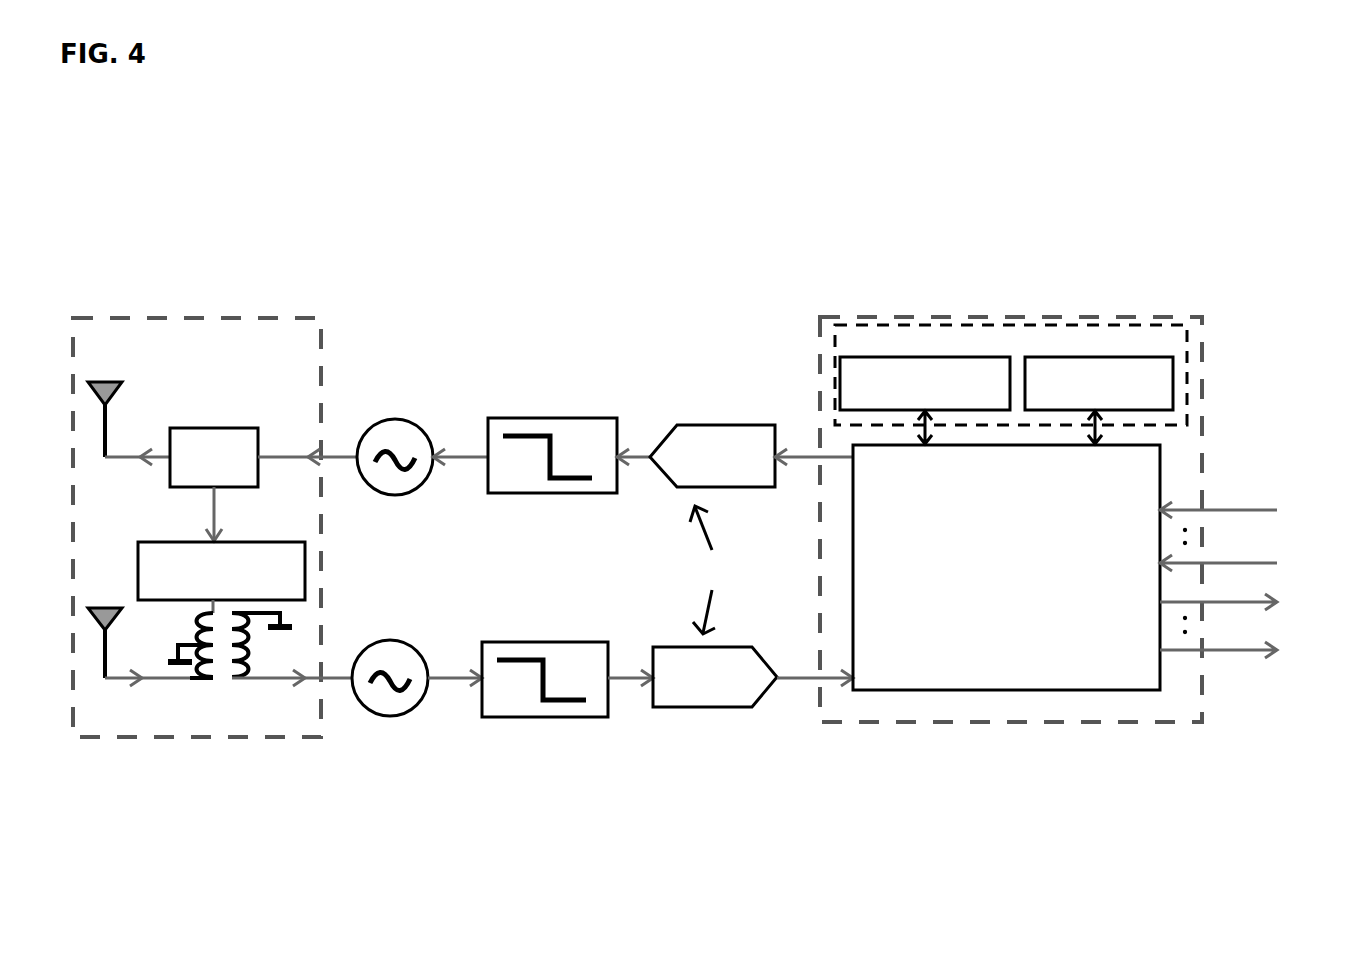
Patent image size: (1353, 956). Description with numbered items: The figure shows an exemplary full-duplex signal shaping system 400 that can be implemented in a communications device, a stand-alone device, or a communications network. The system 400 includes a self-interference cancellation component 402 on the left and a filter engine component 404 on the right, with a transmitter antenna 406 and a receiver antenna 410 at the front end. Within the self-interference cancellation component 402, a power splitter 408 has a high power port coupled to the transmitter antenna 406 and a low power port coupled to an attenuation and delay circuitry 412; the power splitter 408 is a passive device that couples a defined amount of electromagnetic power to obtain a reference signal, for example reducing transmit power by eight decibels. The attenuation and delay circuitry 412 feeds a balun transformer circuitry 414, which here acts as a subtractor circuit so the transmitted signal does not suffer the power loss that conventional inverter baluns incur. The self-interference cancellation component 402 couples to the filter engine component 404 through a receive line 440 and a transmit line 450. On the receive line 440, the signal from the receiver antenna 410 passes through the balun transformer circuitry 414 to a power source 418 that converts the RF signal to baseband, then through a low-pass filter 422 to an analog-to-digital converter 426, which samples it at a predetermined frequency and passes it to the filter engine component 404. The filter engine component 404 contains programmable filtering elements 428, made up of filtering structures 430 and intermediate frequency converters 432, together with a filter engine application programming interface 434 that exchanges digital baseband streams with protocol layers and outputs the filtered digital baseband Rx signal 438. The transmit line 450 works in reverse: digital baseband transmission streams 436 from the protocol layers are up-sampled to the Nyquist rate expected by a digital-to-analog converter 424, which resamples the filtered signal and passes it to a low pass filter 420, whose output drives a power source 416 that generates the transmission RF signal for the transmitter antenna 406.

The full-duplex signal shaping system 400 is at (634, 190).
The self-interference cancellation component 402 is at (183, 316).
The filter engine component 404 is at (1163, 311).
The transmitter antenna 406 is at (113, 398).
The power splitter 408 is at (170, 427).
The receiver antenna 410 is at (110, 632).
The attenuation and delay circuitry 412 is at (307, 587).
The balun transformer circuitry 414 is at (230, 728).
The power source 416 is at (397, 417).
The power source 418 is at (397, 722).
The low pass filter 420 is at (520, 418).
The low-pass filter 422 is at (533, 717).
The digital-to-analog converter 424 is at (700, 425).
The analog-to-digital converter 426 is at (698, 712).
The programmable filtering elements 428 is at (927, 323).
The filtering structures 430 is at (905, 350).
The intermediate frequency converters 432 is at (1090, 350).
The filter engine application programming interface 434 is at (985, 692).
The digital baseband transmission streams 436 is at (1265, 395).
The digital baseband RX streams to protocols 438 is at (1297, 752).
The receive line 440 is at (628, 690).
The transmit line 450 is at (640, 445).